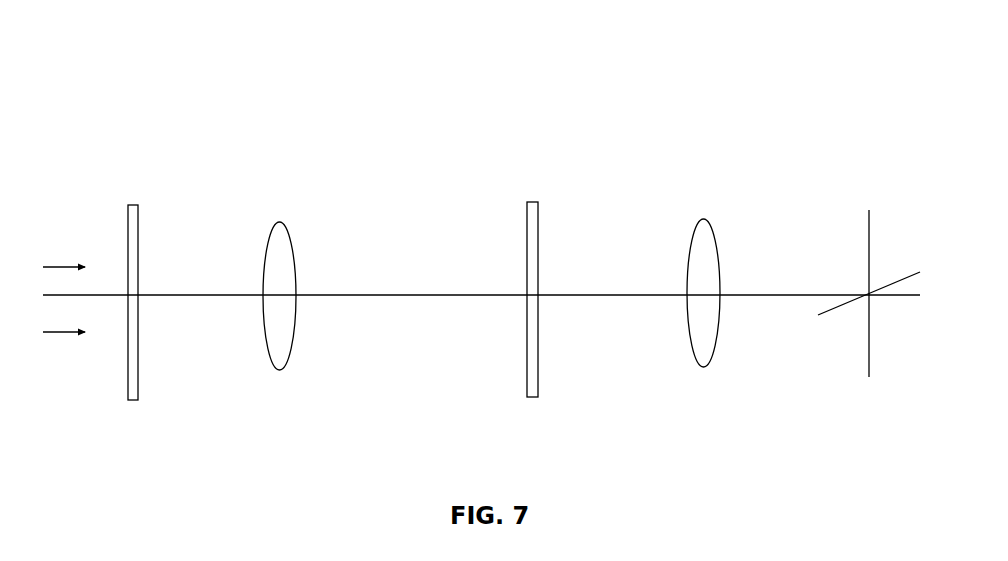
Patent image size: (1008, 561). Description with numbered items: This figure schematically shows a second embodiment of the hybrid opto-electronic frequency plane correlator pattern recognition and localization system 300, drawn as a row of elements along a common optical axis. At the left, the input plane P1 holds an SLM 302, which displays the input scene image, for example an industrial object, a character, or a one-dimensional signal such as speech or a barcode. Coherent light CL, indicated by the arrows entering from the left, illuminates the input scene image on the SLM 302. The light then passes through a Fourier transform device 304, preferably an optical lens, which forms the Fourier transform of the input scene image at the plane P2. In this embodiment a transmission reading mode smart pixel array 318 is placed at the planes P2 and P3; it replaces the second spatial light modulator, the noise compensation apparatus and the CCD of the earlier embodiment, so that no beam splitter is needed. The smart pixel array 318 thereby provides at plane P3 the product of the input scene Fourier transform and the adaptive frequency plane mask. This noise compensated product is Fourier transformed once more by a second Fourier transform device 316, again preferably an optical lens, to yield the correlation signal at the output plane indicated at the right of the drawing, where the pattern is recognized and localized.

The FPC pattern recognition and localization system 300 is at (857, 91).
The SLM 302 is at (133, 385).
The Fourier transform device 304 is at (279, 349).
The Fourier transform device 316 is at (704, 355).
The transmission reading mode smart pixel array 318 is at (532, 201).
The coherent light CL is at (53, 266).
The input plane P1 is at (133, 220).
The Fourier transform plane P2 is at (533, 249).
The product plane P3 is at (534, 249).